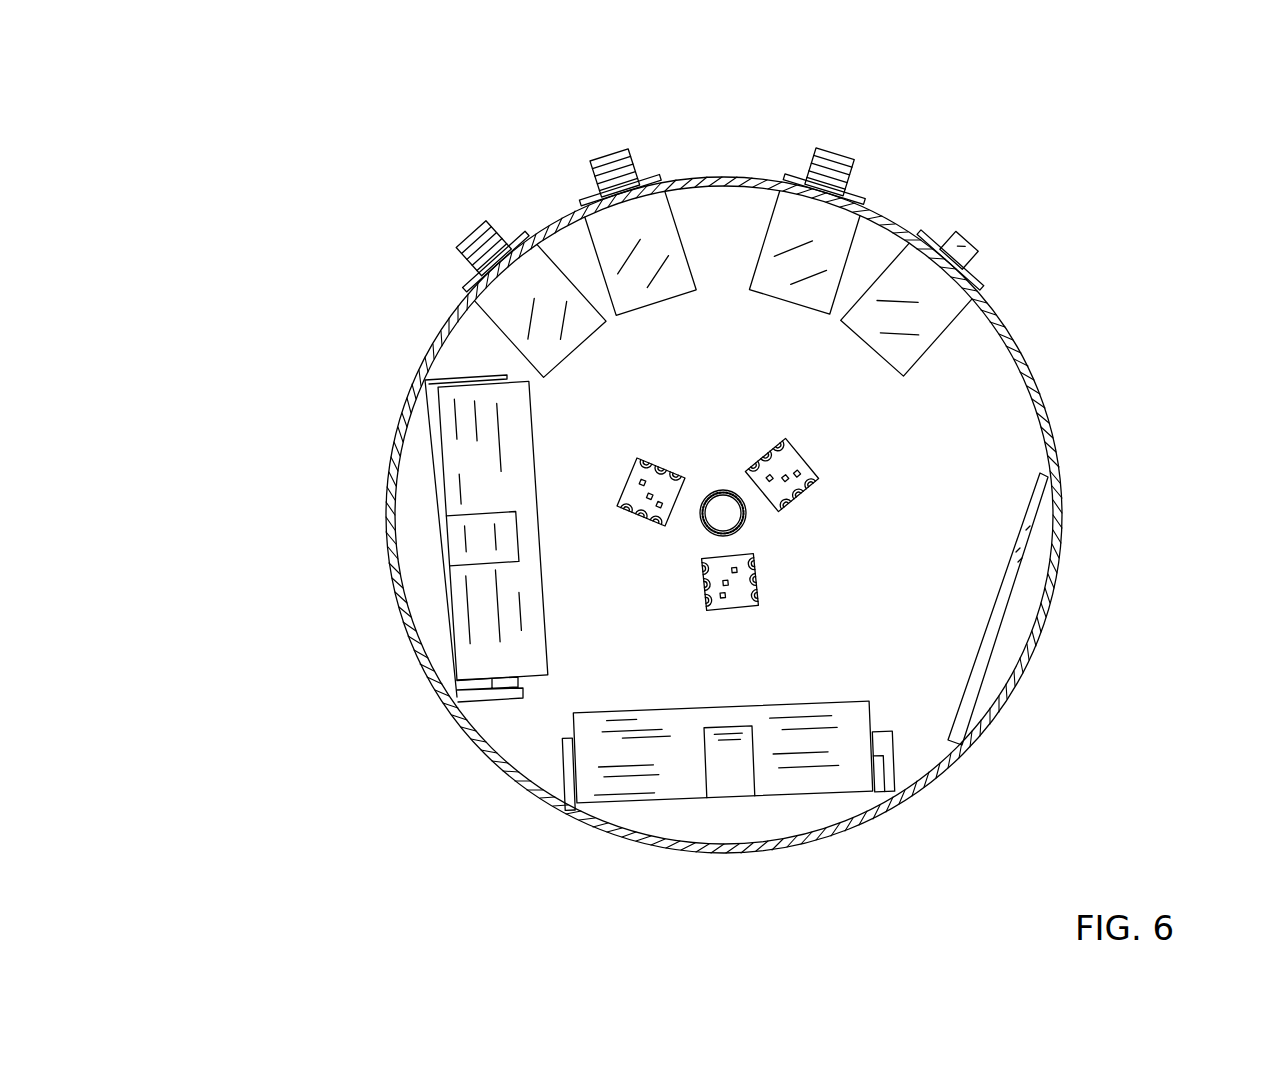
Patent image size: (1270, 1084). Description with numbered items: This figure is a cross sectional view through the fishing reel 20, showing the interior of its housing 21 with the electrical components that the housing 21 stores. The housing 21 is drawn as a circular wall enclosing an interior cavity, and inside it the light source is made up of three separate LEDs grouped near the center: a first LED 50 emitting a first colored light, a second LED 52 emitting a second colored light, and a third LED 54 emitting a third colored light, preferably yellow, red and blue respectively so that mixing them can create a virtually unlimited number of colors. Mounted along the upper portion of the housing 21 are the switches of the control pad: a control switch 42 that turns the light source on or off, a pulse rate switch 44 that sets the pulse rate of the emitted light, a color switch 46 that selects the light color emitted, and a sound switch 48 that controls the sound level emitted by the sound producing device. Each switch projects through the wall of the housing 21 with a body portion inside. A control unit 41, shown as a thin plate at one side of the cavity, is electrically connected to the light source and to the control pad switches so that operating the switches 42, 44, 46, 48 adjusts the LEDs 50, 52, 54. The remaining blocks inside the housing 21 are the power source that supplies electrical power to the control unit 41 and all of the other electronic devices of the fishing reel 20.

The fishing reel 20 is at (1075, 555).
The housing 21 is at (410, 608).
The control unit 41 is at (995, 622).
The control switch 42 is at (484, 236).
The pulse rate switch 44 is at (612, 170).
The color switch 46 is at (834, 165).
The sound switch 48 is at (962, 250).
The first LED 50 is at (642, 472).
The second LED 52 is at (792, 456).
The third LED 54 is at (750, 562).